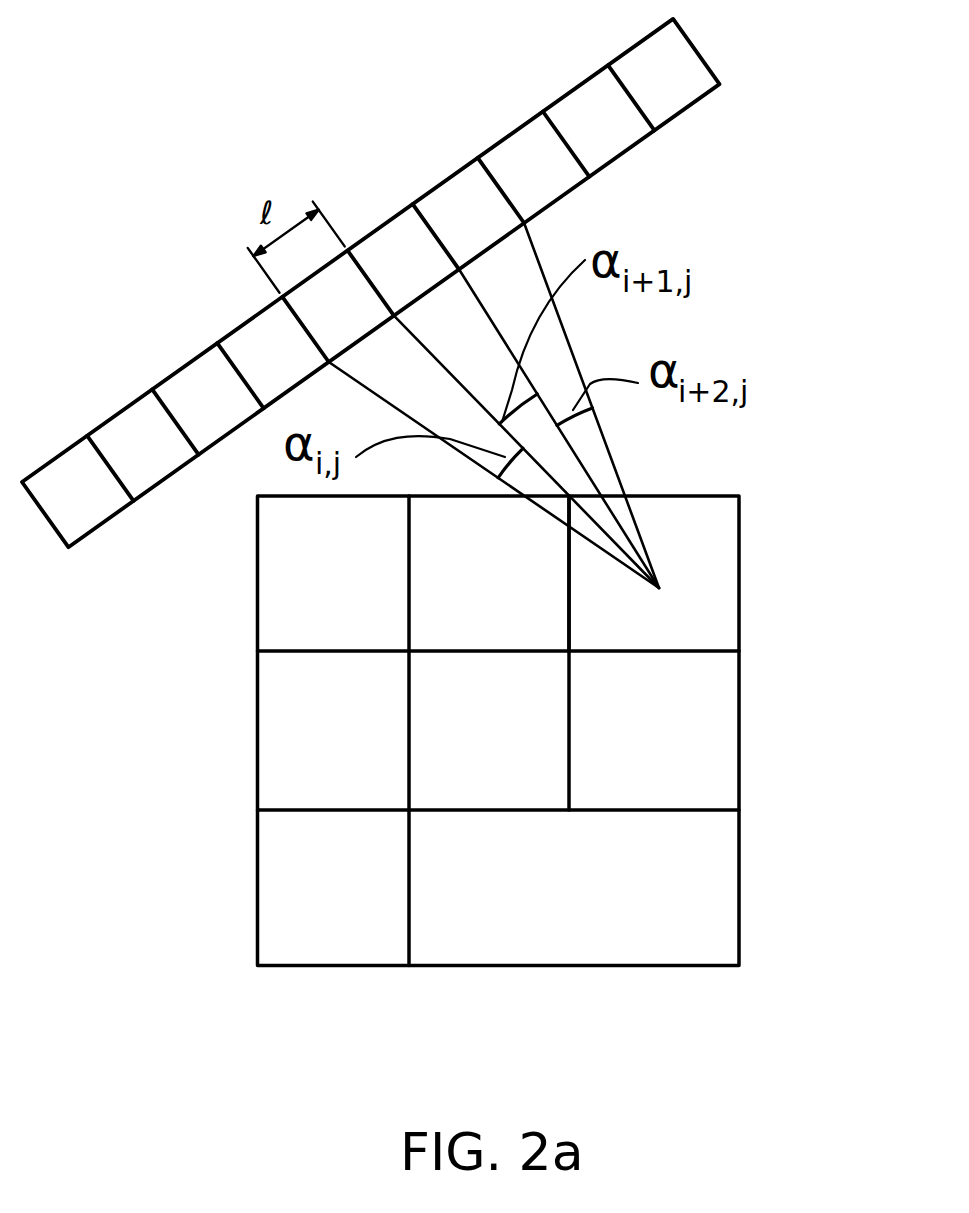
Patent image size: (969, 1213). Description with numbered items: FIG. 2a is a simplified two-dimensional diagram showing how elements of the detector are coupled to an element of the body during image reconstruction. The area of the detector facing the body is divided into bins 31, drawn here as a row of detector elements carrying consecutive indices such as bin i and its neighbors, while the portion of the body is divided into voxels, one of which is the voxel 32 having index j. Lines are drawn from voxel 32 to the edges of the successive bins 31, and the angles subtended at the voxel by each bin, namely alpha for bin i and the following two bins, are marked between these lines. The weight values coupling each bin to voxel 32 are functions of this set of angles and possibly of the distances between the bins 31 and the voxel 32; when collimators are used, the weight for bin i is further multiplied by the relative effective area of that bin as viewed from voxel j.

The bins 31 is at (371, 283).
The voxel 32 is at (592, 722).
The bin index i is at (338, 307).
The voxel index j is at (654, 573).